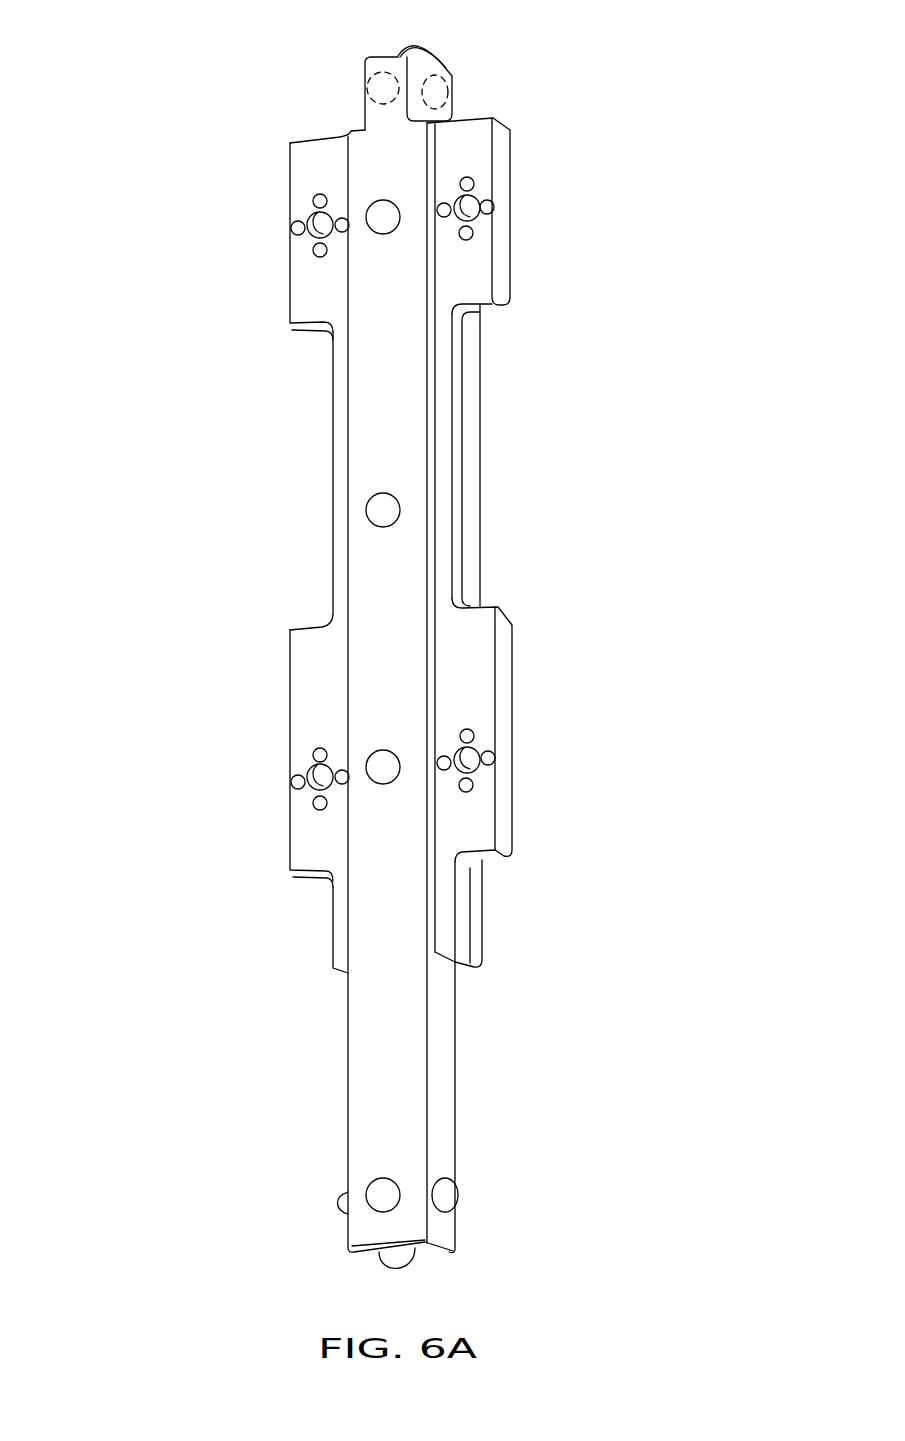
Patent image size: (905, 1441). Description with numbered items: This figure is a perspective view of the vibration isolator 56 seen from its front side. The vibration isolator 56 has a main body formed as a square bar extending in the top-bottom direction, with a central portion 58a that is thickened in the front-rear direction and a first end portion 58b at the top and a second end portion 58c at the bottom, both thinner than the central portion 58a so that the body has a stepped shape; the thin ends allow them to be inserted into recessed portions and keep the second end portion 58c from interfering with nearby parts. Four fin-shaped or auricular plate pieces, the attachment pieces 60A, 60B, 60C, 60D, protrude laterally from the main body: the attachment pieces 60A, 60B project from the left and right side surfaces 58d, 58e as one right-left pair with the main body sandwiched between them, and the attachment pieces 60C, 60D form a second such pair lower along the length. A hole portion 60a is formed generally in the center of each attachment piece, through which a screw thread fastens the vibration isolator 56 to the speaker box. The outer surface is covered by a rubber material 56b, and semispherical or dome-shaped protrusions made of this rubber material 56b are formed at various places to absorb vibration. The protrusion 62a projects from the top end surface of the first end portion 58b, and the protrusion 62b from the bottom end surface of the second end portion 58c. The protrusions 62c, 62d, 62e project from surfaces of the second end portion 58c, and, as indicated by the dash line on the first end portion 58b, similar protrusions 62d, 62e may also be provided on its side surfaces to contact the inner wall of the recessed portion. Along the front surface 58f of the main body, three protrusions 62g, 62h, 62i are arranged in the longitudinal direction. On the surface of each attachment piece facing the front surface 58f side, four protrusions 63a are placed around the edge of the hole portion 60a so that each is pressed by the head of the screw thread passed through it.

The vibration isolator 56 is at (50, 32).
The rubber material 56b is at (323, 372).
The central portion 58a is at (406, 413).
The first end portion 58b is at (441, 62).
The second end portion 58c is at (454, 1230).
The left side surface 58d is at (347, 1035).
The right side surface 58e is at (440, 1045).
The front surface 58f is at (407, 557).
The attachment piece 60A is at (280, 170).
The attachment piece 60B is at (512, 156).
The attachment piece 60C is at (279, 697).
The attachment piece 60D is at (527, 661).
The hole portion 60a is at (318, 222).
The protrusion 62a is at (430, 60).
The protrusion 62b is at (395, 1268).
The protrusion 62c is at (340, 1203).
The protrusion 62d is at (440, 90).
The protrusion 62e is at (381, 87).
The protrusion 62g is at (385, 224).
The protrusion 62h is at (383, 510).
The protrusion 62i is at (385, 778).
The protrusion 63a is at (318, 252).